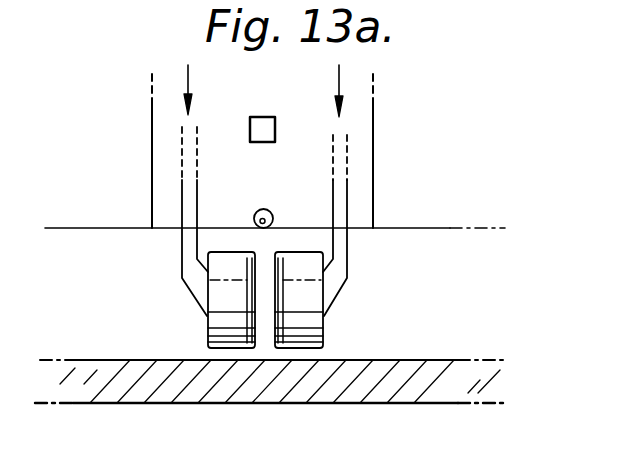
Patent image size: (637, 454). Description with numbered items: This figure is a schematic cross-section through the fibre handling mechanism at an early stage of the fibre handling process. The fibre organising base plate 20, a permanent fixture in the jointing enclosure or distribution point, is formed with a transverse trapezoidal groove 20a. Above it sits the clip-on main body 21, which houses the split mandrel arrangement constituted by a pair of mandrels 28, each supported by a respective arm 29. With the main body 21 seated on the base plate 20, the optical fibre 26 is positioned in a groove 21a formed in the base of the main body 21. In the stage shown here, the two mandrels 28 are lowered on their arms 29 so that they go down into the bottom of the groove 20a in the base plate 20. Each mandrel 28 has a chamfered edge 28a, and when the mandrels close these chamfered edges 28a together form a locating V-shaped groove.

The fibre organising base plate 20 is at (117, 367).
The groove 20a is at (458, 282).
The main body 21 is at (268, 190).
The groove 21a is at (272, 212).
The optical fibre 26 is at (253, 220).
The mandrel 28 is at (235, 295).
The chamfered edge 28a is at (283, 322).
The arm 29 is at (185, 180).